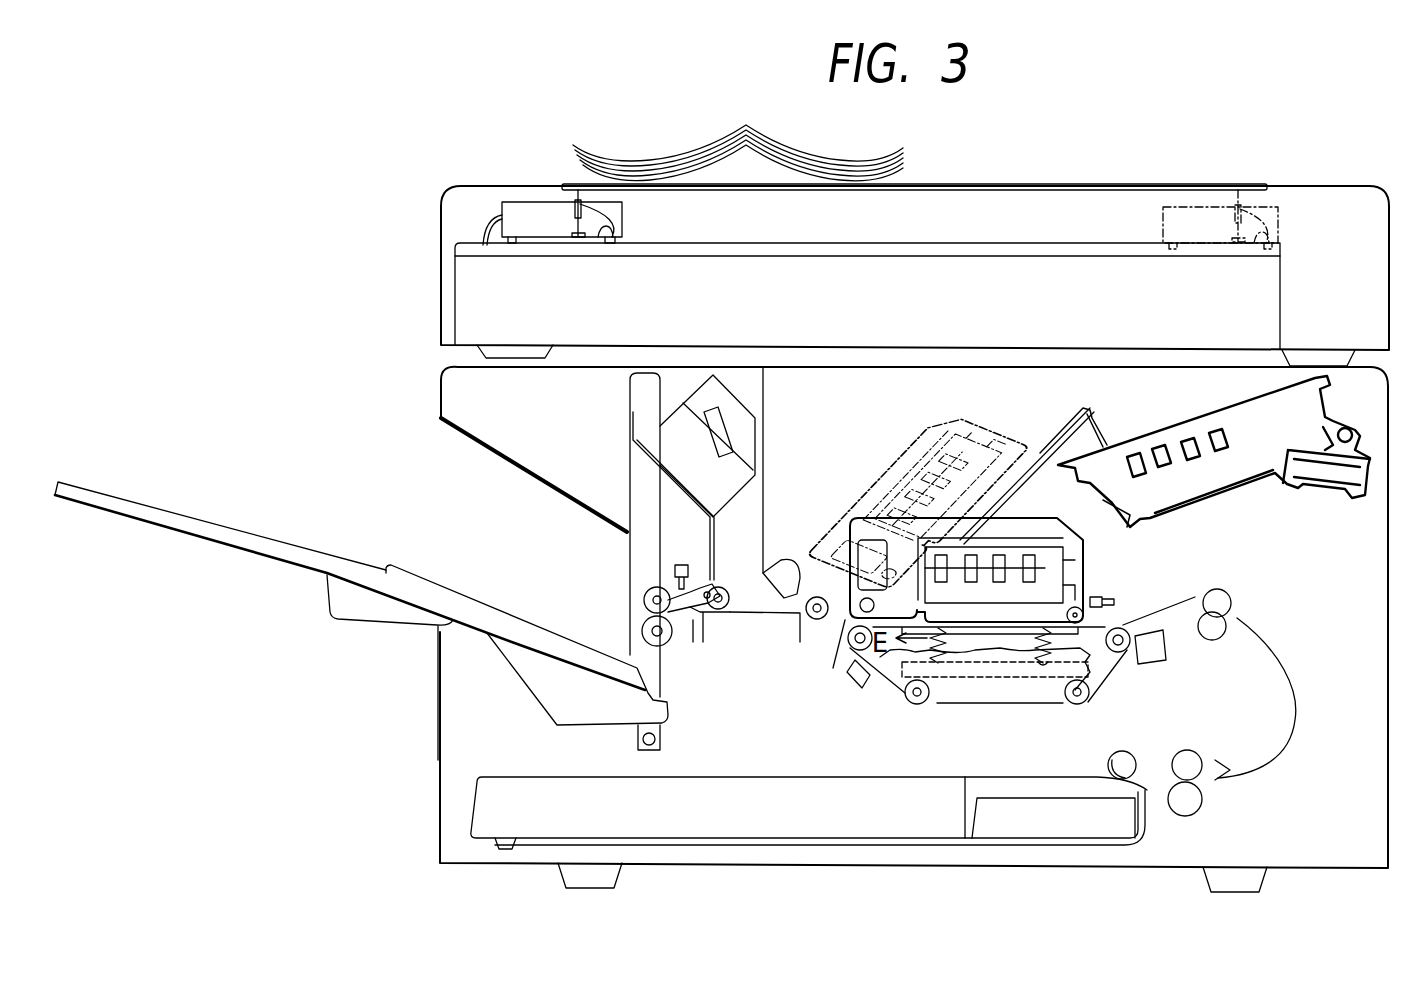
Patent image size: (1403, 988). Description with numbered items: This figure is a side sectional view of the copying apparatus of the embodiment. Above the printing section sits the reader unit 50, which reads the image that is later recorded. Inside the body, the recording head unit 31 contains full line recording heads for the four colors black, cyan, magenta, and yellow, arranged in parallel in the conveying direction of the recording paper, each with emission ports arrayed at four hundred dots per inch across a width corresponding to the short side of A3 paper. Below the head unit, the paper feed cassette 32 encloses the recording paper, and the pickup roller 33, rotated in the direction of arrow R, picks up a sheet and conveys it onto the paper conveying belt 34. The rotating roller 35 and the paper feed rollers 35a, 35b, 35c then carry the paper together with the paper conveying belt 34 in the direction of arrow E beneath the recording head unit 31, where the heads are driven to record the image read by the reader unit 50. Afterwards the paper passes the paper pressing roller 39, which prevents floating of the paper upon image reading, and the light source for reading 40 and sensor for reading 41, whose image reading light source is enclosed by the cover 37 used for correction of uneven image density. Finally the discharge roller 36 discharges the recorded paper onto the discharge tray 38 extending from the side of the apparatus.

The recording head unit 31 is at (1086, 561).
The paper feed cassette 32 is at (912, 845).
The pickup roller 33 is at (1133, 754).
The paper conveying belt 34 is at (997, 690).
The rotating roller 35 is at (1077, 705).
The paper feed roller 35a is at (858, 652).
The paper feed roller 35b is at (917, 705).
The paper feed roller 35c is at (1122, 652).
The discharge roller 36 is at (647, 597).
The cover of image reading light source 37 is at (687, 503).
The discharge tray 38 is at (161, 525).
The paper pressing roller 39 is at (815, 618).
The light source for reading 40 is at (720, 445).
The sensor for reading 41 is at (783, 560).
The reader unit 50 is at (997, 283).